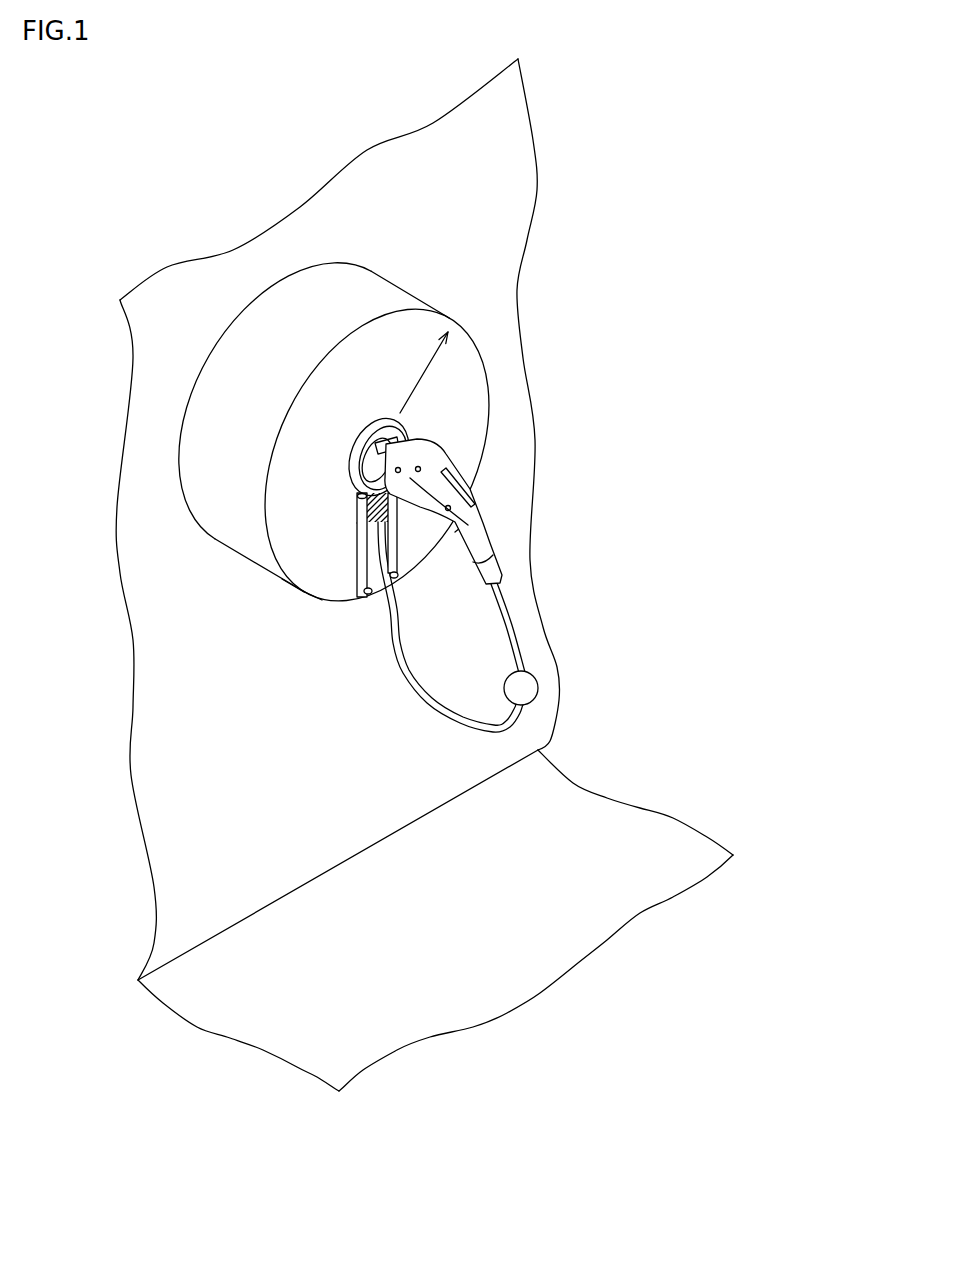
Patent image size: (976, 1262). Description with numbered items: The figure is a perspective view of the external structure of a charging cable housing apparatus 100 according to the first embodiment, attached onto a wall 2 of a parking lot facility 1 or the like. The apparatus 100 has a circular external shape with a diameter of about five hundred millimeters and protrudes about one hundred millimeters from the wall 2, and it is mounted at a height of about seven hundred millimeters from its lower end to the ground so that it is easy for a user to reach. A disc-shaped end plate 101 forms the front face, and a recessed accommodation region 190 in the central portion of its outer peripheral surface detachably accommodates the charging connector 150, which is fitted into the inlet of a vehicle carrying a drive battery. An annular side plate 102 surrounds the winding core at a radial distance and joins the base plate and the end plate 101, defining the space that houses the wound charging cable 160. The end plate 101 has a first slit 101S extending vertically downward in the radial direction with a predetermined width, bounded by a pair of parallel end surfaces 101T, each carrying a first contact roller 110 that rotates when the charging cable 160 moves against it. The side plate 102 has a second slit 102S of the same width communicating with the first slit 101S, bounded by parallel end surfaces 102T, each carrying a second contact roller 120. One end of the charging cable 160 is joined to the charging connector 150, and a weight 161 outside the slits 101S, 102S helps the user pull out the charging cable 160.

The parking lot facility 1 is at (608, 828).
The wall 2 is at (493, 270).
The charging cable housing apparatus 100 is at (337, 453).
The end plate 101 is at (463, 367).
The first slit 101S is at (448, 527).
The end surface 101T is at (357, 523).
The side plate 102 is at (363, 290).
The second slit 102S is at (370, 612).
The end surface 102T is at (370, 583).
The first contact roller 110 is at (357, 553).
The second contact roller 120 is at (368, 594).
The charging connector 150 is at (432, 460).
The charging cable 160 is at (519, 642).
The weight 161 is at (527, 693).
The recessed accommodation region 190 is at (377, 460).